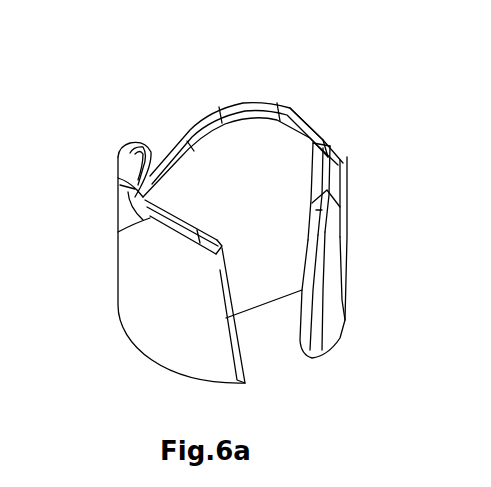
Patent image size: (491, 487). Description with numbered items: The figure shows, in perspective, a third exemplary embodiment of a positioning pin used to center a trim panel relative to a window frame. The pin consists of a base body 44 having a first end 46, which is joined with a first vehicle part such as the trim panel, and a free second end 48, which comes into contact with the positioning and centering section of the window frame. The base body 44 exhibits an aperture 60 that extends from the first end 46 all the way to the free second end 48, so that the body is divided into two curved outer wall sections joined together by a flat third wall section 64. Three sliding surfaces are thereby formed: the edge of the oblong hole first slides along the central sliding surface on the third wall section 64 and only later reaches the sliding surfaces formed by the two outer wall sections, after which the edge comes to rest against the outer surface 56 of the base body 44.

The third wall section 64 is at (243, 117).
The free second end 48 is at (330, 96).
The base body 44 is at (169, 305).
The outer surface 56 is at (169, 305).
The first end 46 is at (195, 302).
The aperture 60 is at (270, 365).